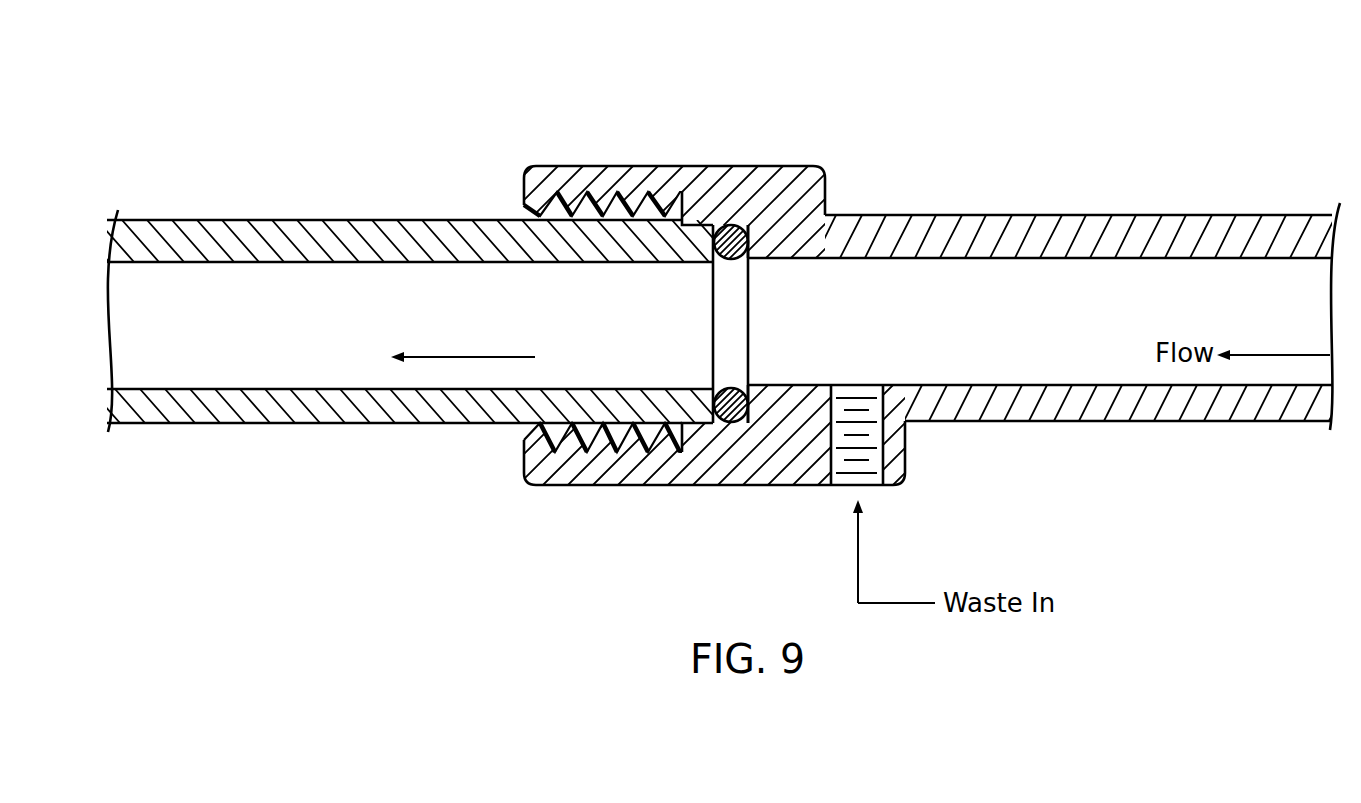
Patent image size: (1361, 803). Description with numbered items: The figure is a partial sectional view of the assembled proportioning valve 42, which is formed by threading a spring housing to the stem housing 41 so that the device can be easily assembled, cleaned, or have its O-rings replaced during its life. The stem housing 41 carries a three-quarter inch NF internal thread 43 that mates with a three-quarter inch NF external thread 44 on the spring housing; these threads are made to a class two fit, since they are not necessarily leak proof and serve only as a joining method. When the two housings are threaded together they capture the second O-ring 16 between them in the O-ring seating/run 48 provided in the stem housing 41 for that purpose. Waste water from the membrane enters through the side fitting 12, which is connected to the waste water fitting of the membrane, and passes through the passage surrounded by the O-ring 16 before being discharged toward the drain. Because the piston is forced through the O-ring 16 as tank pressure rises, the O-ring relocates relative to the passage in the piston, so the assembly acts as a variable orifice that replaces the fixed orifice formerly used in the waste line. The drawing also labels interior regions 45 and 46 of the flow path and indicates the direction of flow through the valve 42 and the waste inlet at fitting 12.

The third entrance fitting 12 is at (857, 398).
The second O-ring 16 is at (727, 354).
The stem housing 41 is at (1064, 214).
The proportioning valve 42 is at (311, 228).
The internal thread 43 is at (629, 470).
The external thread 44 is at (580, 228).
The flow passage 45 is at (344, 369).
The passage 46 is at (947, 289).
The O-ring seating/run 48 is at (758, 304).